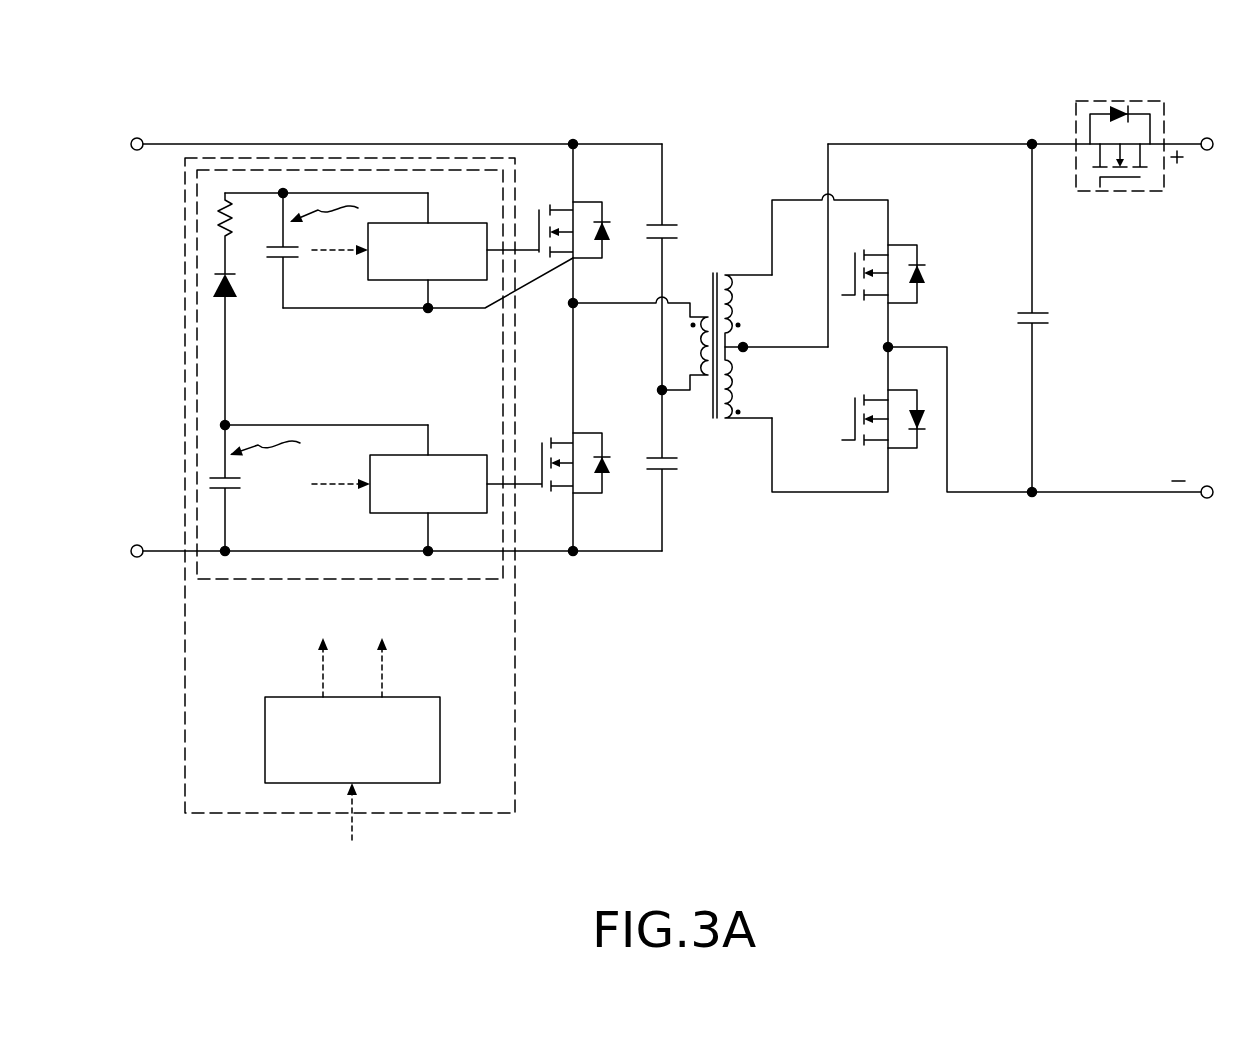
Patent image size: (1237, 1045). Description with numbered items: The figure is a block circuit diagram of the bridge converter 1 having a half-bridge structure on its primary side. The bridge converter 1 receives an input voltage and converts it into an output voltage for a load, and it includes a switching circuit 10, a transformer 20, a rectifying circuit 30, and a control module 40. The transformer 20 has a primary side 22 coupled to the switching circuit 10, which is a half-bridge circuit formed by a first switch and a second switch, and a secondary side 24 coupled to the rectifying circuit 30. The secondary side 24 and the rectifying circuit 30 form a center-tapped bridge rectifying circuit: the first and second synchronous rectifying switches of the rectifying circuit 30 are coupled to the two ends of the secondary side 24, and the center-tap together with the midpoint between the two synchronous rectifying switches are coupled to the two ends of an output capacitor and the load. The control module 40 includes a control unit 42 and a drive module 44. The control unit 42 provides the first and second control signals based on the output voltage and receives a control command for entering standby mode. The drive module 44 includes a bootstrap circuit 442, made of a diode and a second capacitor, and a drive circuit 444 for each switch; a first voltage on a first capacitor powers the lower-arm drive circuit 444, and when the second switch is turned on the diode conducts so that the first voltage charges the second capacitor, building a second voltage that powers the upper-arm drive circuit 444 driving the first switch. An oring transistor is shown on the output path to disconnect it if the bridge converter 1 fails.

The bridge converter 1 is at (667, 453).
The switching circuit 10 is at (342, 133).
The transformer 20 is at (717, 267).
The primary side 22 is at (693, 395).
The secondary side 24 is at (735, 425).
The rectifying circuit 30 is at (945, 132).
The control module 40 is at (510, 697).
The control unit 42 is at (393, 703).
The drive module 44 is at (290, 578).
The bootstrap circuit 442 is at (260, 315).
The drive circuit 444 is at (441, 226).